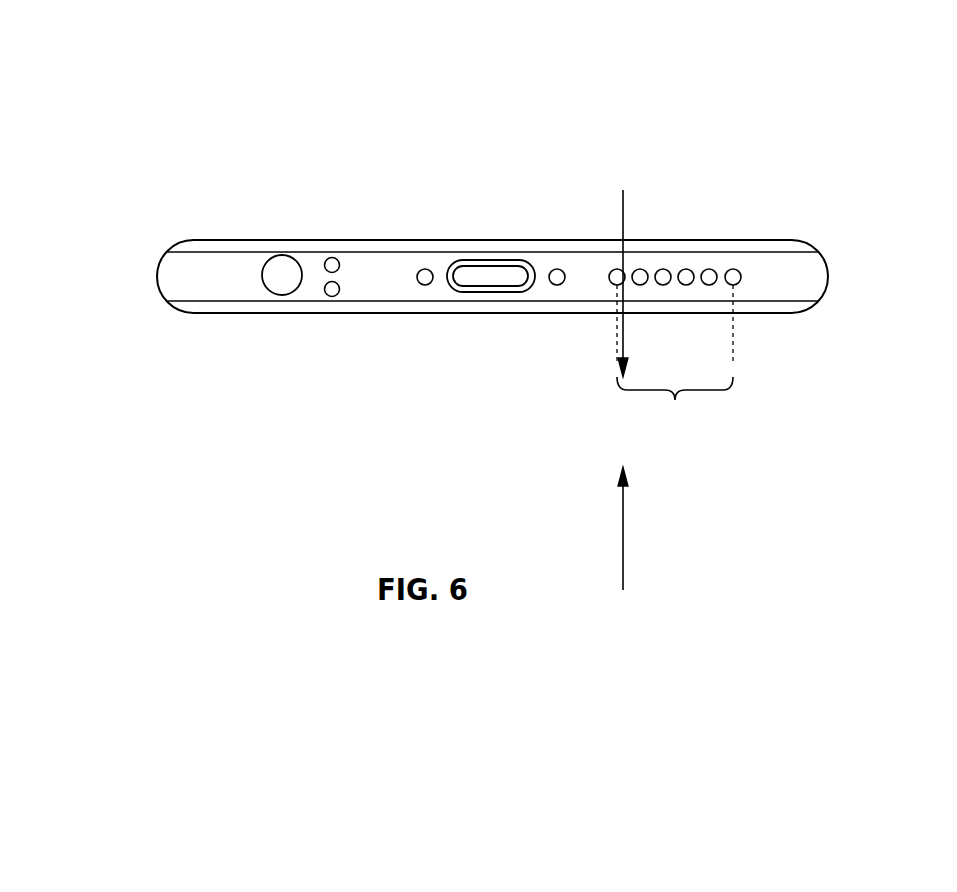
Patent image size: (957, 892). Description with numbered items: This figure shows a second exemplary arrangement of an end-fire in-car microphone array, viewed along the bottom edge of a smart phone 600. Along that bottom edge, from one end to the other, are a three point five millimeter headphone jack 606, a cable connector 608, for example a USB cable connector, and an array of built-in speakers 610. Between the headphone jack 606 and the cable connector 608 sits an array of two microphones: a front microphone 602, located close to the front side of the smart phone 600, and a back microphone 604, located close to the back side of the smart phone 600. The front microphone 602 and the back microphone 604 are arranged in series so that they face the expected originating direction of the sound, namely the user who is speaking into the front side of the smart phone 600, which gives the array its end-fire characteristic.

The smart phone 600 is at (697, 115).
The front microphone 602 is at (332, 262).
The back microphone 604 is at (332, 293).
The 3.5 mm headphone jack 606 is at (282, 275).
The cable connector 608 is at (491, 268).
The array of built-in speakers 610 is at (675, 400).